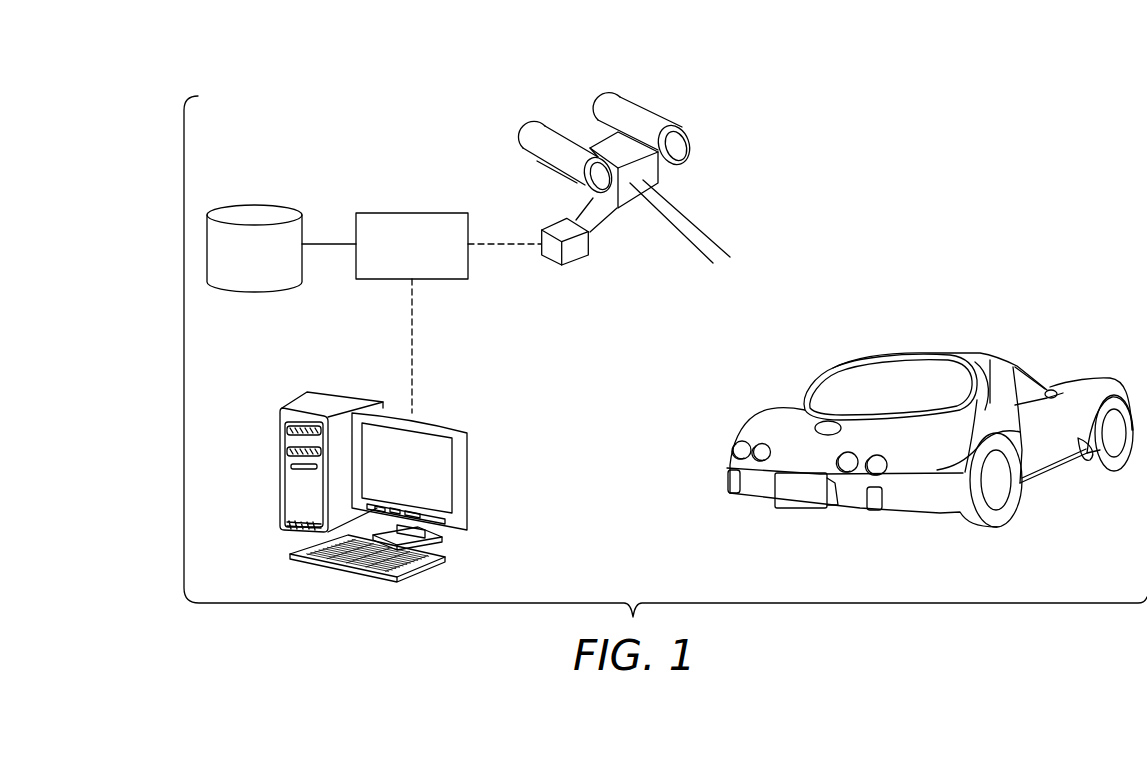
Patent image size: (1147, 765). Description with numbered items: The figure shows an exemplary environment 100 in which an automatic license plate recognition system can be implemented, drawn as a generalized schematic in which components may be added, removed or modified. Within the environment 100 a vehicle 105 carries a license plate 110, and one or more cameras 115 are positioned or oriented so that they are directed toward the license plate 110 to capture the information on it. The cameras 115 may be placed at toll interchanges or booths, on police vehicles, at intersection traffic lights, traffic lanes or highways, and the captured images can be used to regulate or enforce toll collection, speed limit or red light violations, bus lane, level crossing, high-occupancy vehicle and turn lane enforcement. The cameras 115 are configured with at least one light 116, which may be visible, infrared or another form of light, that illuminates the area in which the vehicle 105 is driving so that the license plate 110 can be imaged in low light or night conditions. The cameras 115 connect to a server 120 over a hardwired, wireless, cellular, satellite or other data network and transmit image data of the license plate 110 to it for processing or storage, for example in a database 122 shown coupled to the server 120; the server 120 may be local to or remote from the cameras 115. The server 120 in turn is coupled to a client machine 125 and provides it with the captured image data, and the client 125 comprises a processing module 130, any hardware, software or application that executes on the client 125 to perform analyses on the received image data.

The environment 100 is at (837, 207).
The vehicle 105 is at (930, 430).
The license plate 110 is at (798, 504).
The cameras 115 is at (545, 142).
The light 116 is at (612, 148).
The server 120 is at (397, 213).
The database 122 is at (248, 212).
The client machine 125 is at (437, 447).
The processing module 130 is at (281, 452).